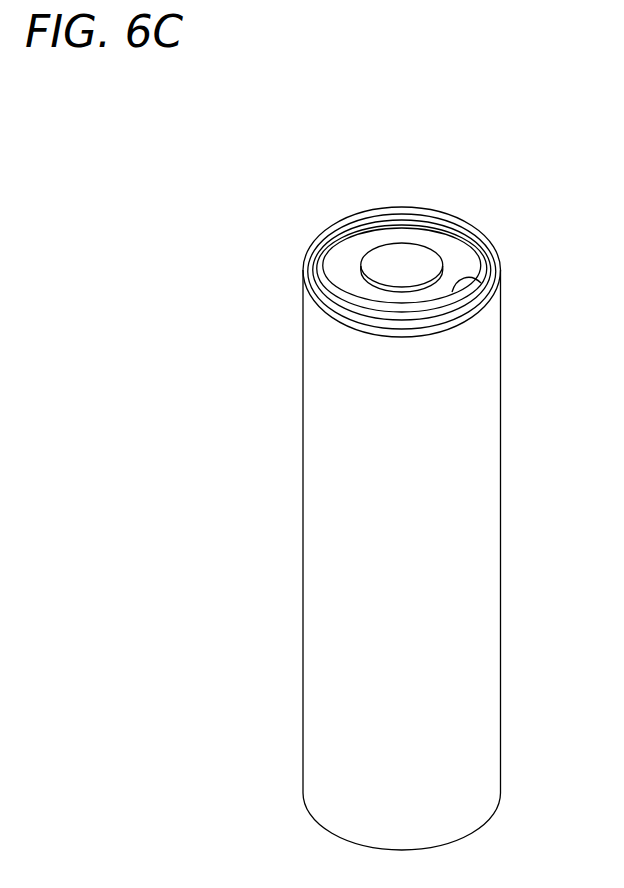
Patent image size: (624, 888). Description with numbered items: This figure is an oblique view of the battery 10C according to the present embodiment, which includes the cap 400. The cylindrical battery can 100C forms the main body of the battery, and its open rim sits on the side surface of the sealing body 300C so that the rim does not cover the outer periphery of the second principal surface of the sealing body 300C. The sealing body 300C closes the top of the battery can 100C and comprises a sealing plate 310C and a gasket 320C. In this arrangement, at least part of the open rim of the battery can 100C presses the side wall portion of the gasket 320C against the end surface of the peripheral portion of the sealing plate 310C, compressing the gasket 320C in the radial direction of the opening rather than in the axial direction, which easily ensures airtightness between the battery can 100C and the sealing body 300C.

The battery 10C is at (433, 130).
The battery can 100C is at (478, 556).
The cap 400 is at (348, 217).
The sealing body 300C is at (346, 264).
The sealing plate 310C is at (424, 255).
The gasket 320C is at (482, 278).